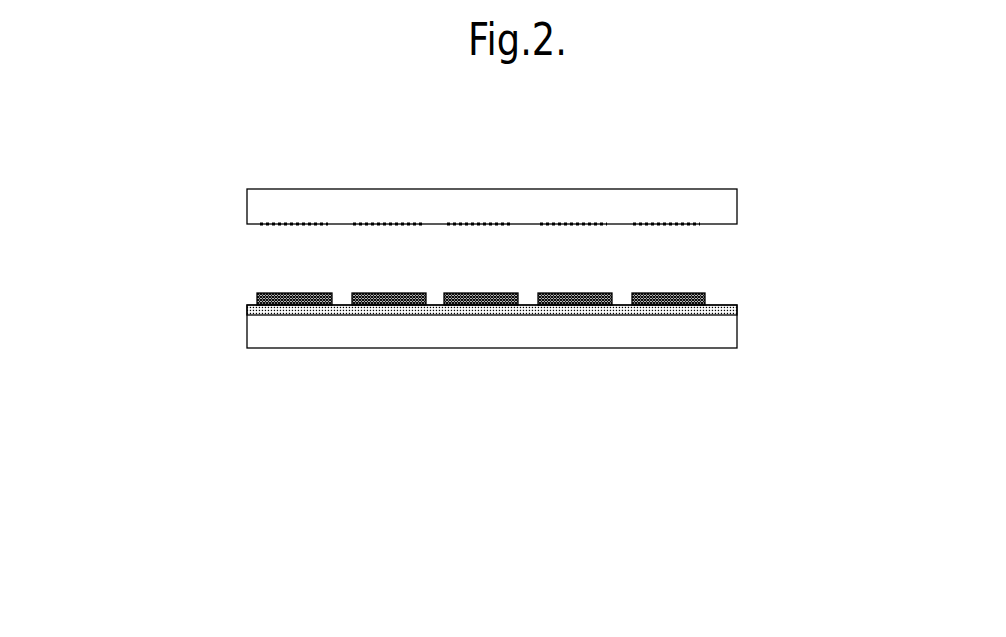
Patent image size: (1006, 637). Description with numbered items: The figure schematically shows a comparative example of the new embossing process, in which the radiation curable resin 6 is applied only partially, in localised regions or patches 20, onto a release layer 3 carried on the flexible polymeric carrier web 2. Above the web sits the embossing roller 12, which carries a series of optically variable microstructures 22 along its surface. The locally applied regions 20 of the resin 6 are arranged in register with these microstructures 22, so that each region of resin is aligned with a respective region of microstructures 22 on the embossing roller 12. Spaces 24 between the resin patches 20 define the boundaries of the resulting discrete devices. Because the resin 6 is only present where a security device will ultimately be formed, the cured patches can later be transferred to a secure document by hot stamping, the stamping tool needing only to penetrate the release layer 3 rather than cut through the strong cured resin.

The polymeric carrier web 2 is at (258, 330).
The release layer 3 is at (736, 311).
The radiation curable resin 6 is at (526, 358).
The embossing roller 12 is at (530, 204).
The localised regions or patches 20 is at (289, 322).
The optically variable microstructures 22 is at (260, 227).
The spaces 24 is at (481, 329).